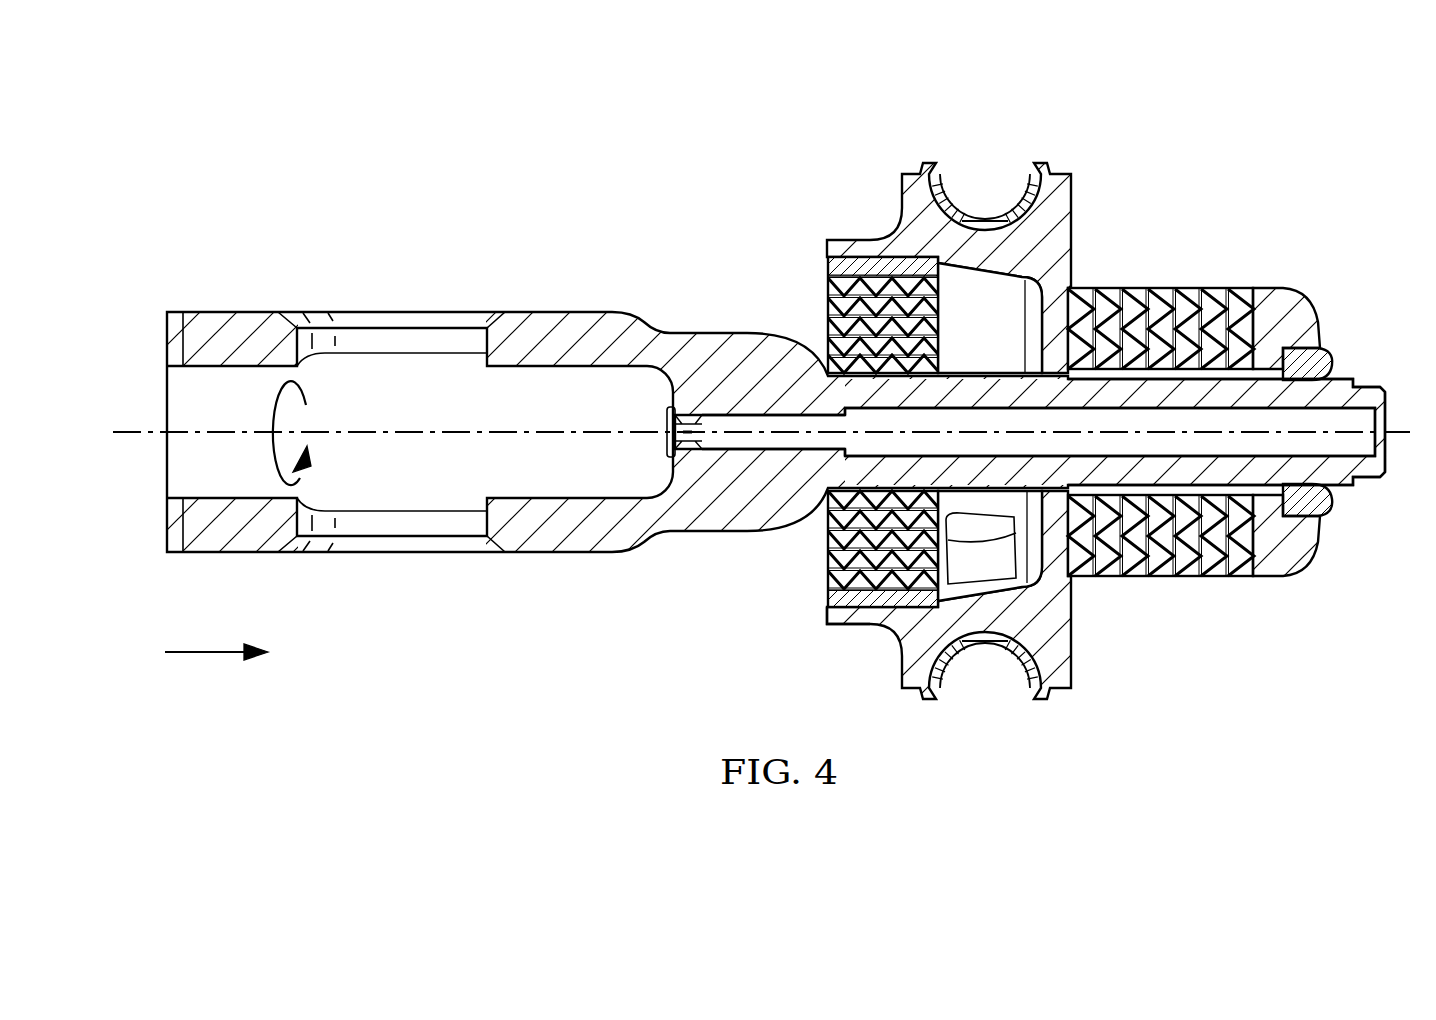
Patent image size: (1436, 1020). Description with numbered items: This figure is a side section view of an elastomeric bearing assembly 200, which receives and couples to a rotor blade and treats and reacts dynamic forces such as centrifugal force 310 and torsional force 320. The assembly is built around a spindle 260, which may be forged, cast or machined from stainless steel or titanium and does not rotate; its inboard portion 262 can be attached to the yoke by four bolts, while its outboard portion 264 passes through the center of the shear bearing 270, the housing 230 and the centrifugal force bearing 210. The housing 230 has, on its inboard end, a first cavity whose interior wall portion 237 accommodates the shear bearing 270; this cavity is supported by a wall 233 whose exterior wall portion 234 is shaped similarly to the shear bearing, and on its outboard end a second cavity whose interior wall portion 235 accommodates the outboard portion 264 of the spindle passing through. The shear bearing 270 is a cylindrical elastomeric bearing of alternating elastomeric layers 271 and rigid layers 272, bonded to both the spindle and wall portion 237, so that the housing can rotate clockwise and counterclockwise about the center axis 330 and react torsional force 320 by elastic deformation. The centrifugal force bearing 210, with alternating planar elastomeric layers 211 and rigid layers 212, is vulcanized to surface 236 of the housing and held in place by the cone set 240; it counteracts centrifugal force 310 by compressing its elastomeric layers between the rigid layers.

The elastomeric bearing assembly 200 is at (254, 138).
The centrifugal force bearing 210 is at (1166, 600).
The elastomeric layers 211 is at (1242, 288).
The rigid layers 212 is at (1190, 288).
The housing 230 is at (1073, 197).
The wall 233 is at (876, 630).
The exterior wall portion 234 is at (830, 622).
The interior wall portion 235 is at (1043, 356).
The surface 236 is at (1090, 288).
The interior wall portion 237 is at (826, 598).
The cone set 240 is at (1330, 358).
The spindle 260 is at (1374, 480).
The inboard portion 262 is at (786, 464).
The outboard portion 264 is at (1273, 470).
The shear bearing 270 is at (800, 546).
The elastomeric layers 271 is at (830, 265).
The rigid layers 272 is at (830, 300).
The centrifugal force 310 is at (216, 678).
The torsional force 320 is at (268, 410).
The center axis 330 is at (755, 463).